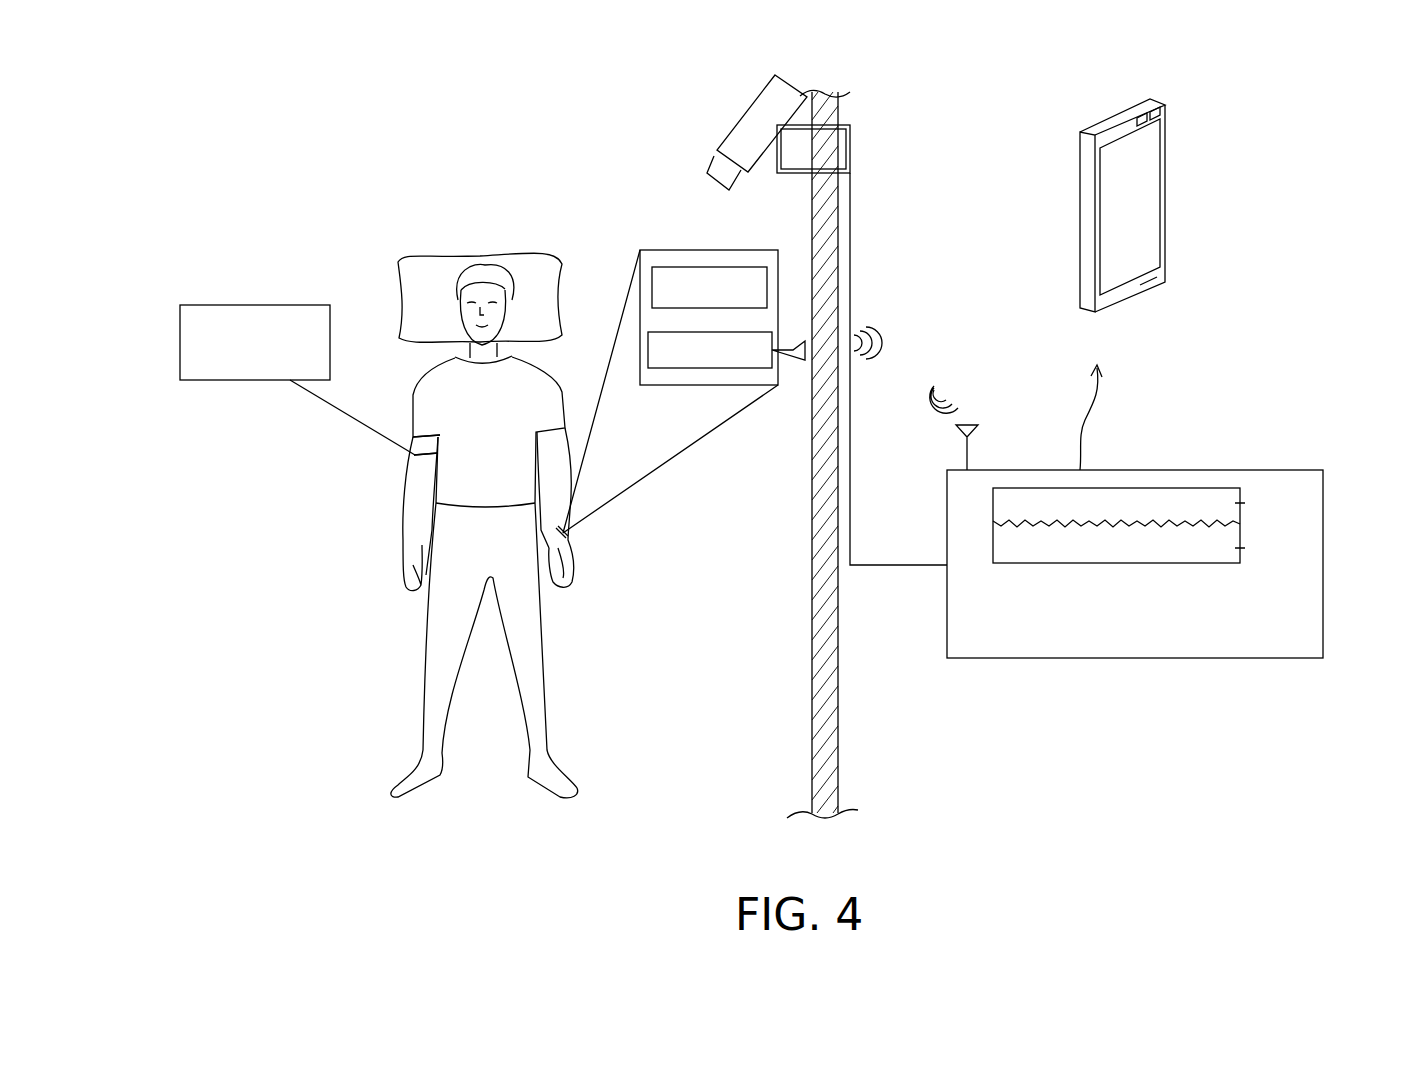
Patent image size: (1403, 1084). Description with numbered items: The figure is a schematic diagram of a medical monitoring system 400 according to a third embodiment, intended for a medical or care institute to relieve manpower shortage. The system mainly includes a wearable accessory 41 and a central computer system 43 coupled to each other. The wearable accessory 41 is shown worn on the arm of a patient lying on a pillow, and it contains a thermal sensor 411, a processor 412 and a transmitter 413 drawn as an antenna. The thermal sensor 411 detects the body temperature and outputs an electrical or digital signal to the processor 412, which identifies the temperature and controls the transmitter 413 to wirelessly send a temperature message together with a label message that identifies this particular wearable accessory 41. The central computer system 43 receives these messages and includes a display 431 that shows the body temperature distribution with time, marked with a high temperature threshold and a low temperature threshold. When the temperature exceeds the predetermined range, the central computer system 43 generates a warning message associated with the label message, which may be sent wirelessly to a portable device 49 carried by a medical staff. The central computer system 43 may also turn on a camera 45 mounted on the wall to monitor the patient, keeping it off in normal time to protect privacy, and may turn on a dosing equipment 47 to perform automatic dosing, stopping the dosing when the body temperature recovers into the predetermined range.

The medical monitoring system 400 is at (1012, 133).
The wearable accessory 41 is at (757, 361).
The thermal sensor 411 is at (660, 267).
The processor 412 is at (670, 368).
The transmitter 413 is at (800, 362).
The central computer system 43 is at (1135, 546).
The display 431 is at (1207, 488).
The camera 45 is at (728, 136).
The dosing equipment 47 is at (295, 305).
The portable device 49 is at (1165, 275).